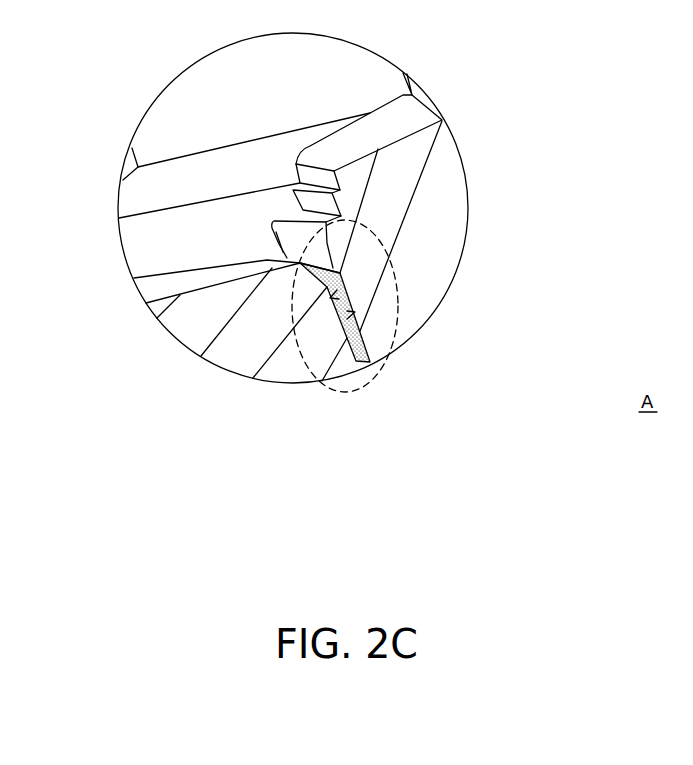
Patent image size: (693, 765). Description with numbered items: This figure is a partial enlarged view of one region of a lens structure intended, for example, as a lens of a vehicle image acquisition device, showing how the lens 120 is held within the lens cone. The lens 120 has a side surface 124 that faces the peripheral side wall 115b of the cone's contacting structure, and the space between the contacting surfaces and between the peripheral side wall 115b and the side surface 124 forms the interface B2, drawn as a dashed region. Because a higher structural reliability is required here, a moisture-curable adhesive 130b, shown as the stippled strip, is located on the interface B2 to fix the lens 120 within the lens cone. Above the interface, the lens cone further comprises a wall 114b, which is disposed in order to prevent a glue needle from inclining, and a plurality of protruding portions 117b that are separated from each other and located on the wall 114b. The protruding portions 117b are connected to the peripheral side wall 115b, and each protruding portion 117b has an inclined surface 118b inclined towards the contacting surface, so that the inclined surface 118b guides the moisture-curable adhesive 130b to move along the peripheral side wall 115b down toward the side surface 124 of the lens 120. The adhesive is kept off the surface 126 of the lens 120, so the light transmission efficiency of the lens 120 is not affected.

The wall 114b is at (320, 203).
The protruding portions 117b is at (338, 233).
The inclined surface 118b is at (290, 228).
The side surface 124 is at (303, 328).
The surface 126 is at (198, 289).
The lens 120 is at (227, 353).
The peripheral side wall 115b is at (303, 330).
The moisture-curable adhesive 130b is at (370, 362).
The interface B2 is at (397, 363).